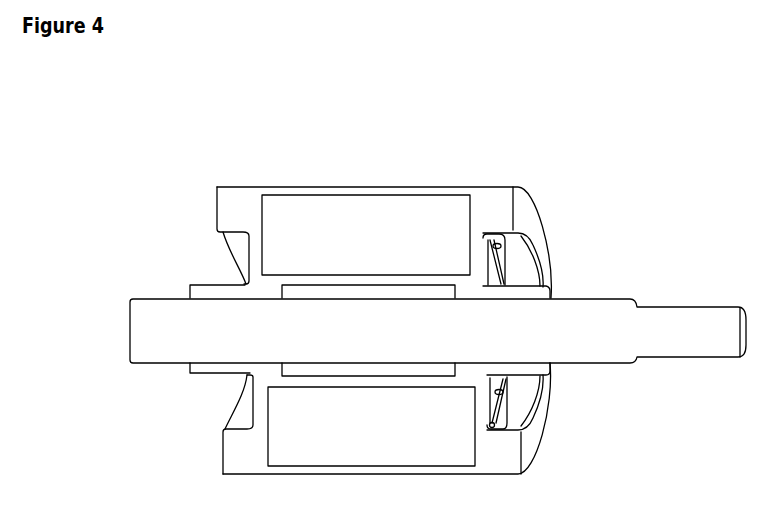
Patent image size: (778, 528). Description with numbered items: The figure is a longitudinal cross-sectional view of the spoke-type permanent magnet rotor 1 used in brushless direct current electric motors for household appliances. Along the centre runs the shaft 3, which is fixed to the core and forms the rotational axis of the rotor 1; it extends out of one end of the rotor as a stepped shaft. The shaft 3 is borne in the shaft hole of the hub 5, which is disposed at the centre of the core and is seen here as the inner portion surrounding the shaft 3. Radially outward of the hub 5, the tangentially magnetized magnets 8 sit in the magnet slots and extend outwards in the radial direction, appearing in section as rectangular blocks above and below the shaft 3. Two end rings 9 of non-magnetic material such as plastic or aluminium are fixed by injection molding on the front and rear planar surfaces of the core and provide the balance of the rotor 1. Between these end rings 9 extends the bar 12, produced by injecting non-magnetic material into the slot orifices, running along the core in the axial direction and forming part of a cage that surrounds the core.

The rotor 1 is at (149, 167).
The shaft 3 is at (612, 315).
The hub 5 is at (352, 293).
The magnet 8 is at (368, 208).
The end ring 9 is at (243, 197).
The bar 12 is at (423, 192).